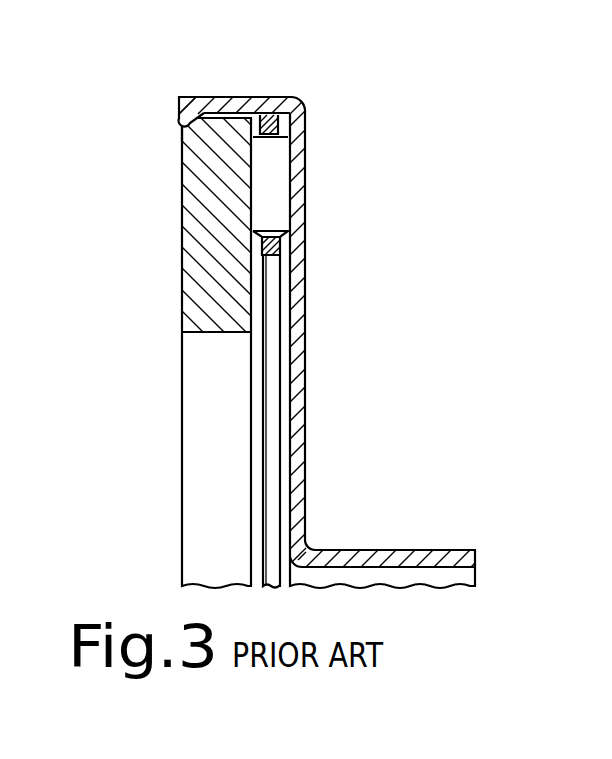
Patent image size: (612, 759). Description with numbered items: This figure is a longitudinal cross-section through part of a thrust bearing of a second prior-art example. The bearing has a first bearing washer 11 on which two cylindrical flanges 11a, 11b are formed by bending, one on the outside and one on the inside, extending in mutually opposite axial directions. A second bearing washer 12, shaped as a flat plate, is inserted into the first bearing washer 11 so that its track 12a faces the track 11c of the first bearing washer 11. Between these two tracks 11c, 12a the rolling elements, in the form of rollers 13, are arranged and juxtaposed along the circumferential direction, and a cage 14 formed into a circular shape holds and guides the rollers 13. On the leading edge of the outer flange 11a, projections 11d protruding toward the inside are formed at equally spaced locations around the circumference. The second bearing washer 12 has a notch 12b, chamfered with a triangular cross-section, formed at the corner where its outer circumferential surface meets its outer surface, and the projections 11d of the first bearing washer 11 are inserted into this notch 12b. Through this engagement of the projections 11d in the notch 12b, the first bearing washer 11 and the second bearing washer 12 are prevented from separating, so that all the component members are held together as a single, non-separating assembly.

The first bearing washer 11 is at (268, 295).
The cylindrical flange 11a is at (244, 93).
The cylindrical flange 11b is at (386, 550).
The track 11c is at (305, 170).
The projections 11d is at (178, 107).
The second bearing washer 12 is at (155, 353).
The track 12a is at (222, 212).
The notch 12b is at (179, 130).
The rollers 13 is at (270, 193).
The cage 14 is at (304, 121).